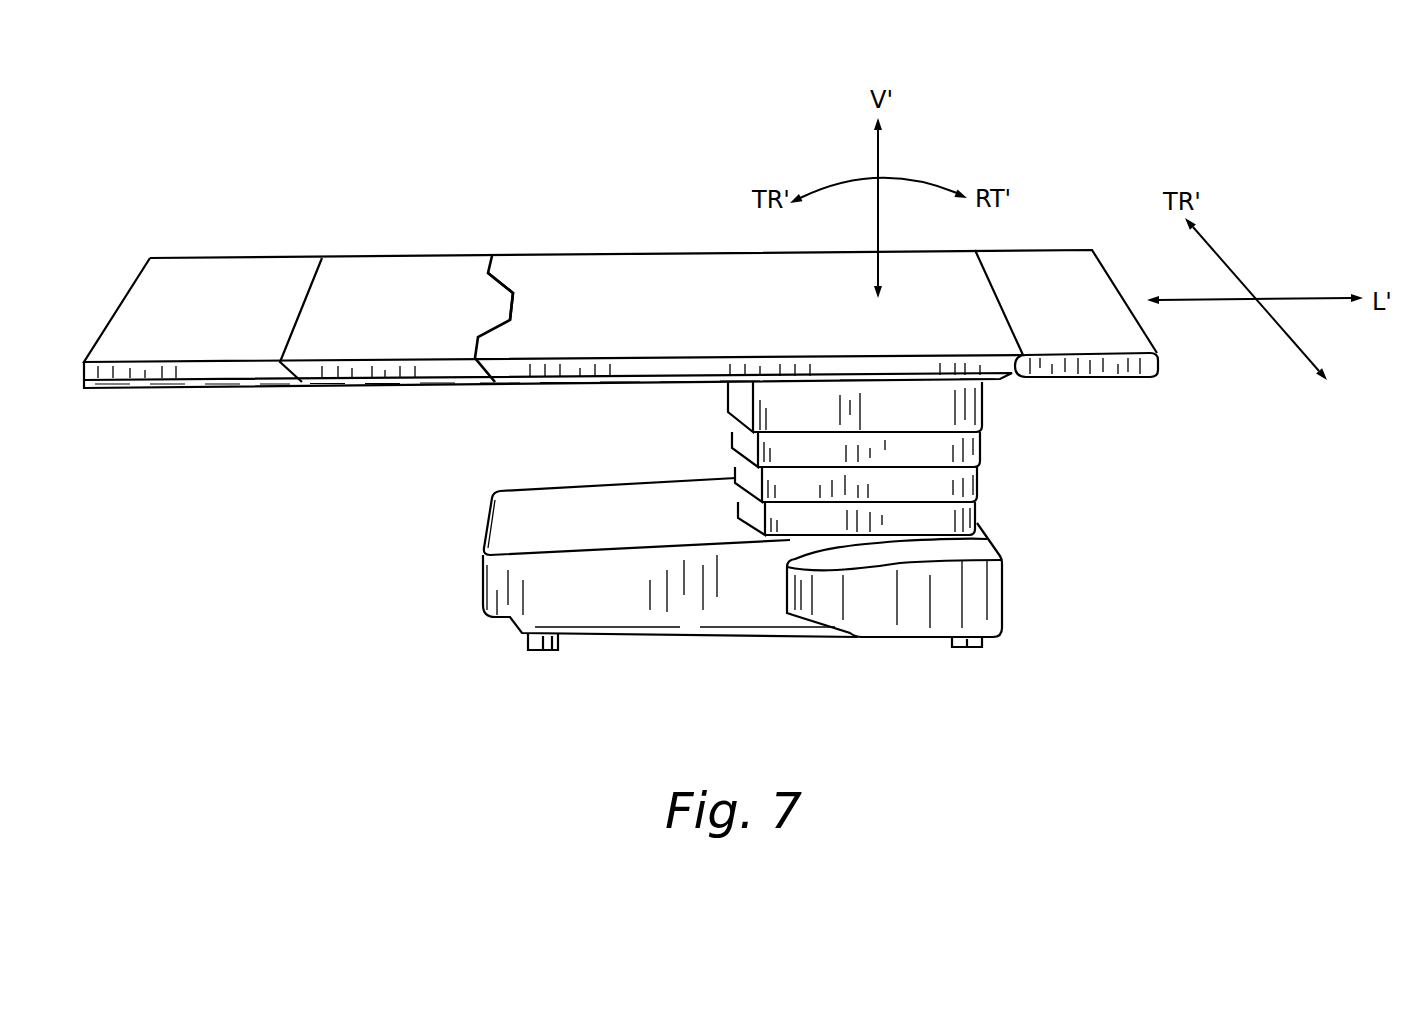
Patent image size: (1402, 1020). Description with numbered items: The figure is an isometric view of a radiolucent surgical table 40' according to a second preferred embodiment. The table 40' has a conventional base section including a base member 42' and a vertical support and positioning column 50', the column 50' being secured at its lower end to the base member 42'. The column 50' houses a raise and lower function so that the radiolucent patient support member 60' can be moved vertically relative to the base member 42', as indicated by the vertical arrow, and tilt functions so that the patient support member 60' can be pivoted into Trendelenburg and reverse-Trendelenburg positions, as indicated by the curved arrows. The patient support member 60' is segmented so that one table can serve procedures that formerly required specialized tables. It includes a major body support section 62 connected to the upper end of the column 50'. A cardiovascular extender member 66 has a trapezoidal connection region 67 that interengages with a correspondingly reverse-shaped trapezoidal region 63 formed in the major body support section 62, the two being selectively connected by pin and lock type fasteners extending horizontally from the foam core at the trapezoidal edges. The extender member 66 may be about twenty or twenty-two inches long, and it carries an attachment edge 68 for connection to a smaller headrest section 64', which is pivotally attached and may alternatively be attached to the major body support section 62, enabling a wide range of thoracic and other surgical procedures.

The table 40' is at (621, 389).
The radiolucent patient support member 60' is at (621, 258).
The major body support section 62 is at (738, 321).
The trapezoidal region 63 is at (530, 312).
The headrest section 64' is at (628, 281).
The cardio-vascular extender member 66 is at (407, 321).
The trapezoidal connection region 67 is at (480, 308).
The attachment edge 68 is at (317, 282).
The vertical support and positioning column 50' is at (932, 458).
The base member 42' is at (816, 564).